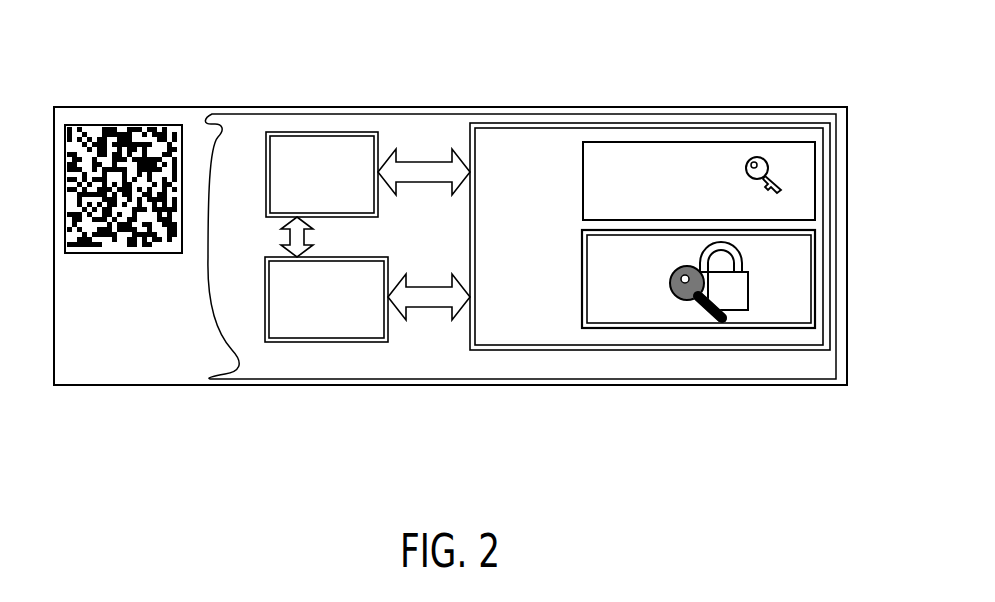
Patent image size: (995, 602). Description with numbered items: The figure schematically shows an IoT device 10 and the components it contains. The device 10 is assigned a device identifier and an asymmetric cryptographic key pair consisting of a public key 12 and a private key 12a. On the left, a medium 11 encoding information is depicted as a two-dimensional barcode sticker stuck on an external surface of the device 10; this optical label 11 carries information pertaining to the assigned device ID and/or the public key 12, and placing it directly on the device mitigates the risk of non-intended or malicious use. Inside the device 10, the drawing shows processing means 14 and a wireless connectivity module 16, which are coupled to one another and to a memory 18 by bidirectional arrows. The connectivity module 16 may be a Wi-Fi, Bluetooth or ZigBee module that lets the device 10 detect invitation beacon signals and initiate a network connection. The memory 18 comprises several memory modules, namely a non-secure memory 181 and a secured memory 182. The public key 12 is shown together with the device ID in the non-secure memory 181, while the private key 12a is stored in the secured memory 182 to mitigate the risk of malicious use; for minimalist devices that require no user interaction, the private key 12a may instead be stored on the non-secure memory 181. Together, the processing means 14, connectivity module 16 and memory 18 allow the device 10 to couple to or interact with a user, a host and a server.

The device 10 is at (165, 385).
The medium encoding information 11 is at (125, 132).
The public key 12 is at (753, 162).
The private key 12a is at (738, 313).
The processing means 14 is at (315, 152).
The wireless connectivity module 16 is at (320, 342).
The memory 18 is at (508, 352).
The non-secure memory 181 is at (627, 142).
The secured memory 182 is at (632, 300).